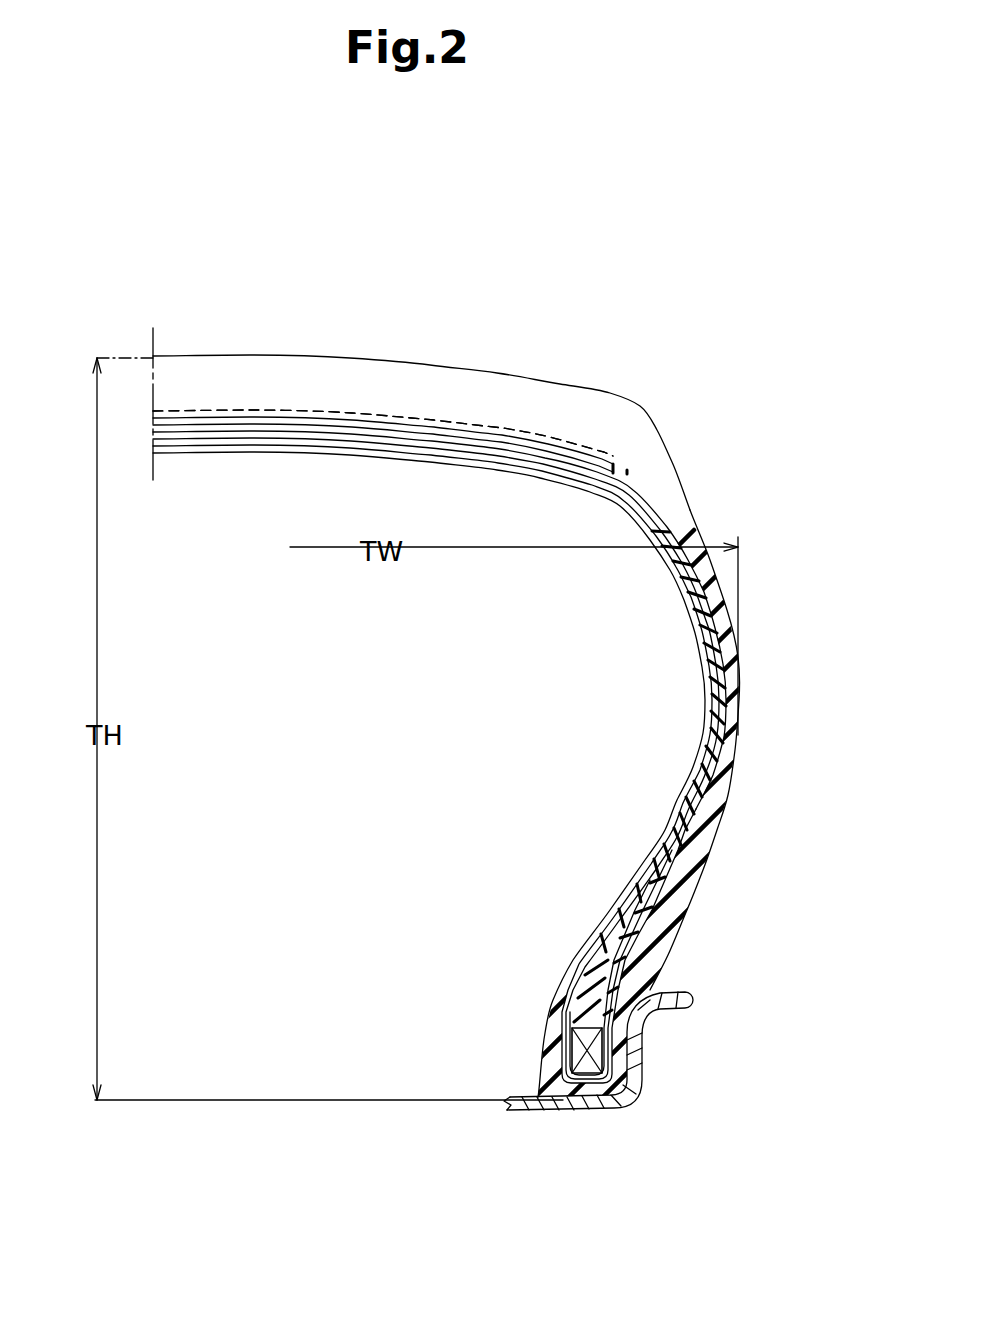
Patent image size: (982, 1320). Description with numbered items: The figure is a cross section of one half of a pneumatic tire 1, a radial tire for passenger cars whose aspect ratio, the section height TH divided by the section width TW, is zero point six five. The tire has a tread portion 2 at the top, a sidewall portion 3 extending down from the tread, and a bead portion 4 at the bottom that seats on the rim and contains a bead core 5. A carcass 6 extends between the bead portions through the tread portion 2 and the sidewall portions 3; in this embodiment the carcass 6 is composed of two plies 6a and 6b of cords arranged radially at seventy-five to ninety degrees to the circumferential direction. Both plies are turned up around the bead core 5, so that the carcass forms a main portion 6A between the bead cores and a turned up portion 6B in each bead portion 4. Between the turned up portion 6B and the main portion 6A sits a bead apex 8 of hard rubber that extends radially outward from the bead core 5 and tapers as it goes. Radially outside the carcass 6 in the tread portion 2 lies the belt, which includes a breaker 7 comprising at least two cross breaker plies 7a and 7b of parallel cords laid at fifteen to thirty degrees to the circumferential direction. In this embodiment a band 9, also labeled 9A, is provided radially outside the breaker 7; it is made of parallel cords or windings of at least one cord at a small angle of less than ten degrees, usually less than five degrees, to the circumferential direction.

The pneumatic tire 1 is at (693, 432).
The tread portion 2 is at (497, 373).
The sidewall portion 3 is at (753, 657).
The bead portion 4 is at (647, 1040).
The bead core 5 is at (577, 1053).
The carcass 6 is at (566, 588).
The carcass ply 6a is at (702, 638).
The carcass ply 6b is at (687, 588).
The main portion 6A is at (720, 697).
The turned up portion 6B is at (712, 810).
The breaker 7 is at (350, 275).
The breaker ply 7a is at (253, 424).
The breaker ply 7b is at (232, 417).
The bead apex 8 is at (590, 987).
The band 9 is at (420, 410).
The band 9A is at (383, 433).